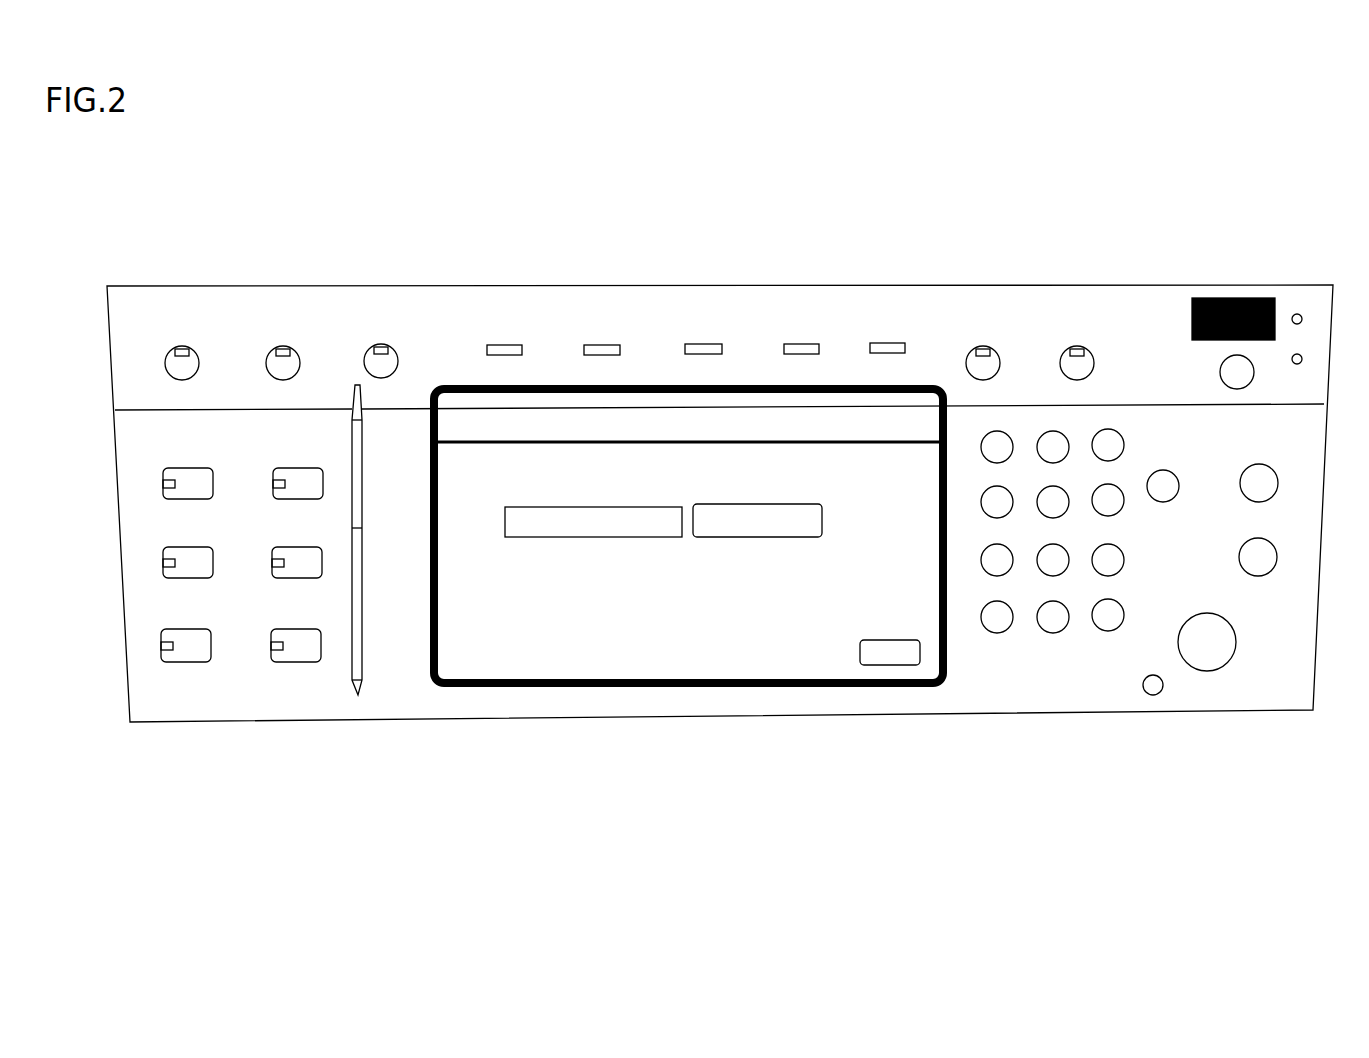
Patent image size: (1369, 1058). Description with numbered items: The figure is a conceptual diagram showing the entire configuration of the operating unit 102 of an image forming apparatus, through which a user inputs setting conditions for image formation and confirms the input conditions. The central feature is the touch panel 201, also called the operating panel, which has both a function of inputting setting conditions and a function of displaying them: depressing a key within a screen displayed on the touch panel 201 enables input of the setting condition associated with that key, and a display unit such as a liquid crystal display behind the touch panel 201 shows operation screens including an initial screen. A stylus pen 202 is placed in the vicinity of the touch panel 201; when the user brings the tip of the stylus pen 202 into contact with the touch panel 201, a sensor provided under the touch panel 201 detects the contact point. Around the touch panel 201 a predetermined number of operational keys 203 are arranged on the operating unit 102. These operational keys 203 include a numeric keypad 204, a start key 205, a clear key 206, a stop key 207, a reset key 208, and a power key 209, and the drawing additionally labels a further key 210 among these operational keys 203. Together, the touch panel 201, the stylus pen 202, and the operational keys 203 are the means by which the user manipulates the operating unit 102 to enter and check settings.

The operating unit 102 is at (731, 726).
The touch panel 201 is at (533, 708).
The stylus pen 202 is at (358, 695).
The operational keys 203 is at (1118, 607).
The numeric keypad 204 is at (1046, 660).
The start key 205 is at (1207, 655).
The clear key 206 is at (1161, 497).
The stop key 207 is at (1259, 567).
The reset key 208 is at (1262, 497).
The power key 209 is at (1245, 380).
The setup key 210 is at (1153, 687).